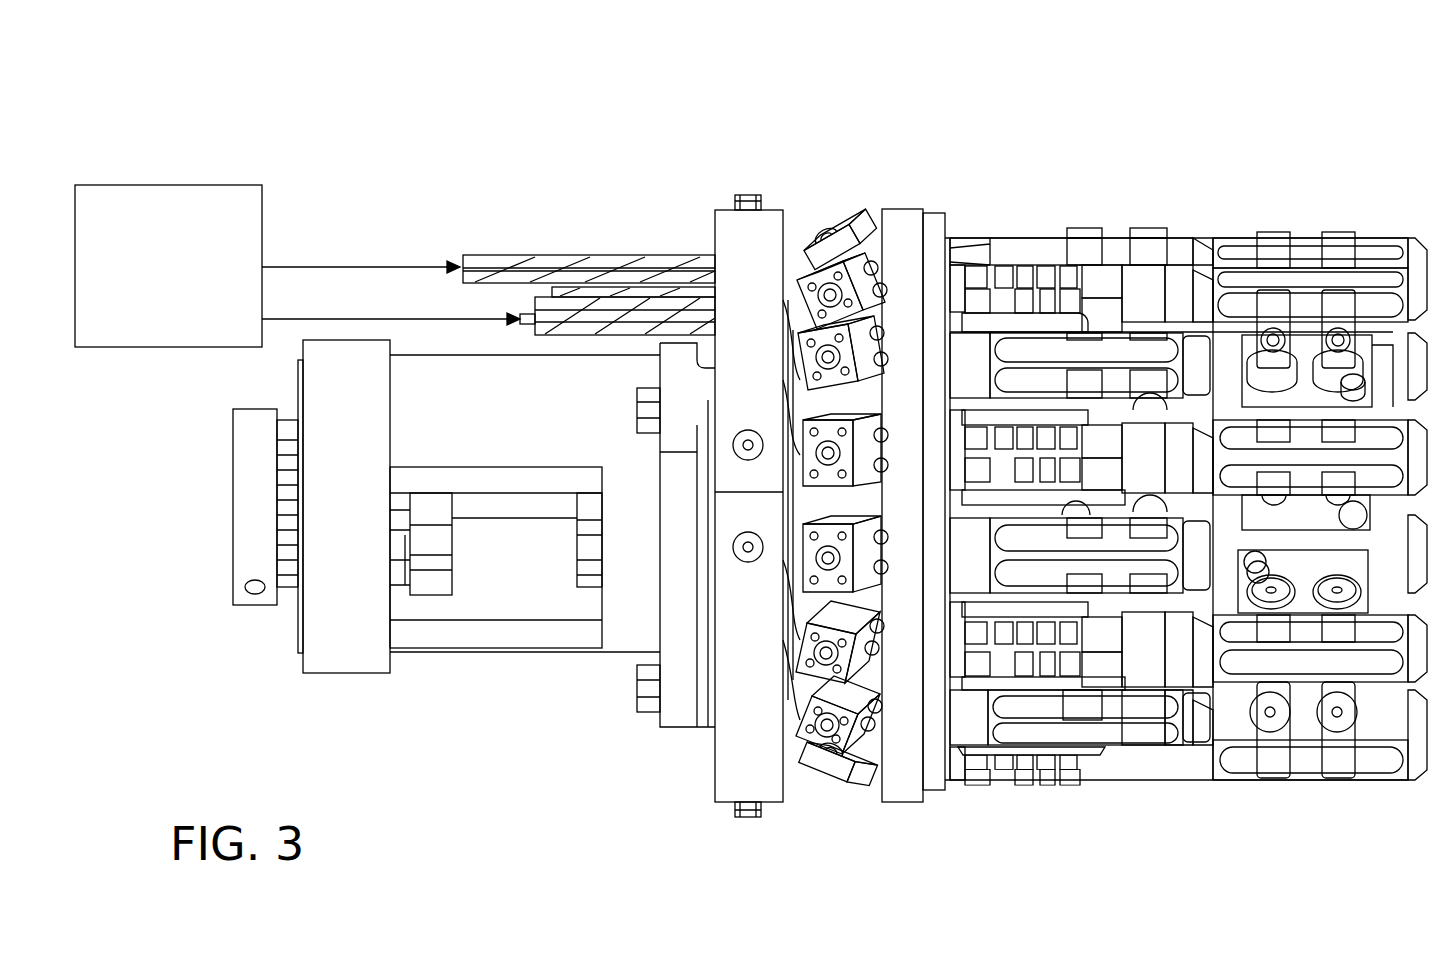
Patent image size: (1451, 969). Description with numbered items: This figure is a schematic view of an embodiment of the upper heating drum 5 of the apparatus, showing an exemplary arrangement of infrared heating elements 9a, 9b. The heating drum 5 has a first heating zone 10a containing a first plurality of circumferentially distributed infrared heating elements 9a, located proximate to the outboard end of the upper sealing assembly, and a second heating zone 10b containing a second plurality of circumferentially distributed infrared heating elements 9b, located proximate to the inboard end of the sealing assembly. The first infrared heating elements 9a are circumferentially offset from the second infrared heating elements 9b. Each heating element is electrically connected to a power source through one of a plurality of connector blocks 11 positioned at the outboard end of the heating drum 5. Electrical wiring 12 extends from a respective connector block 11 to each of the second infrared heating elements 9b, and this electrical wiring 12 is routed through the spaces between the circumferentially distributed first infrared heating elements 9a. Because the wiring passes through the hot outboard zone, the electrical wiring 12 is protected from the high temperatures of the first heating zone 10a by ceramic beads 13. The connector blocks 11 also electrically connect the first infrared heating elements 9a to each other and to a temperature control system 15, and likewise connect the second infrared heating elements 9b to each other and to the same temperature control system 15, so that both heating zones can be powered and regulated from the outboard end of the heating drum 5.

The upper heating drum 5 is at (496, 108).
The first infrared heating elements 9a is at (1093, 555).
The second infrared heating elements 9b is at (1298, 663).
The first heating zone 10a is at (1198, 183).
The second heating zone 10b is at (1443, 183).
The connector blocks 11 is at (806, 252).
The electrical wiring 12 is at (963, 664).
The ceramic beads 13 is at (1024, 663).
The temperature control system 15 is at (297, 266).